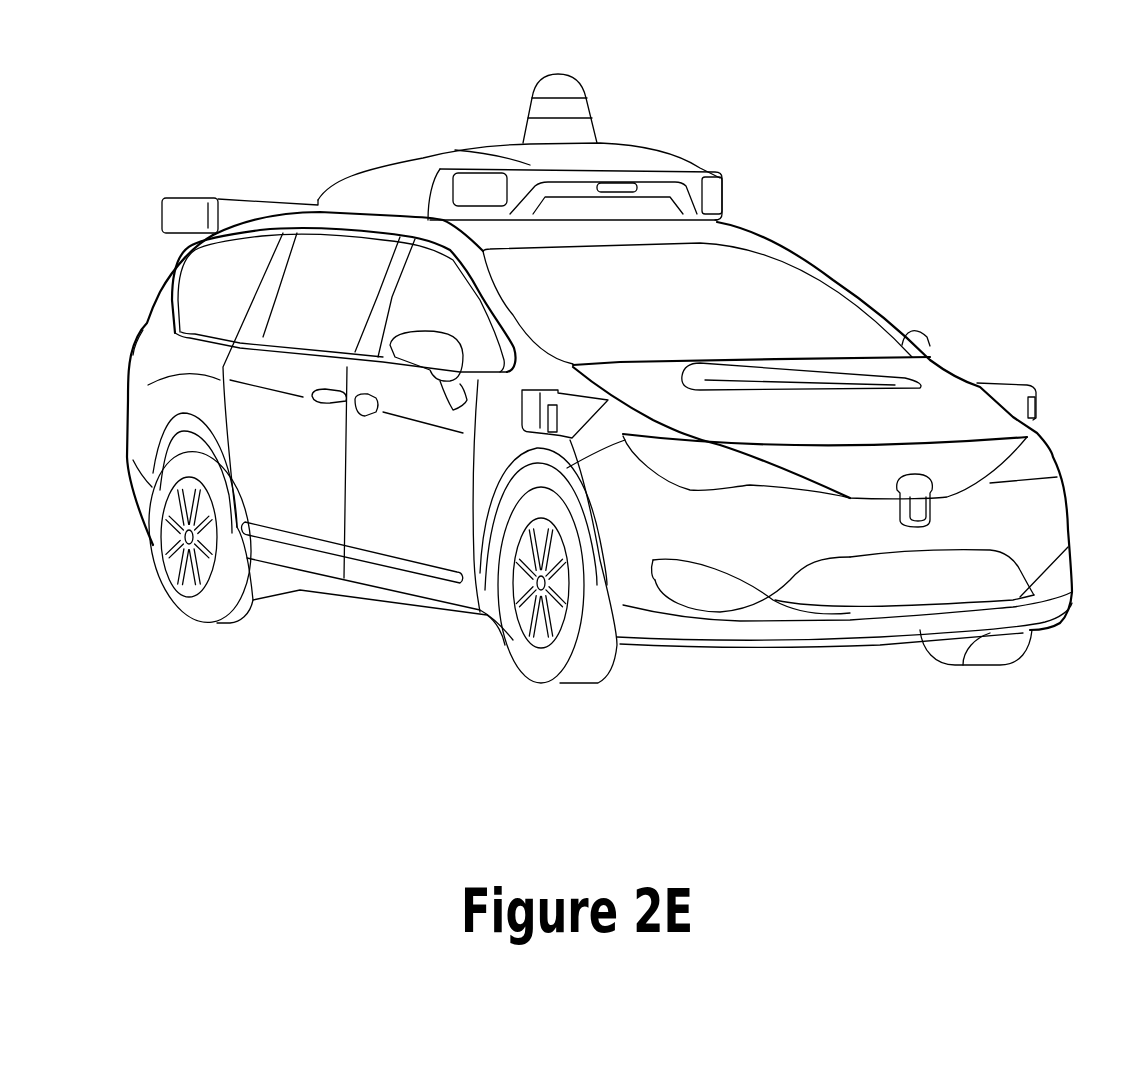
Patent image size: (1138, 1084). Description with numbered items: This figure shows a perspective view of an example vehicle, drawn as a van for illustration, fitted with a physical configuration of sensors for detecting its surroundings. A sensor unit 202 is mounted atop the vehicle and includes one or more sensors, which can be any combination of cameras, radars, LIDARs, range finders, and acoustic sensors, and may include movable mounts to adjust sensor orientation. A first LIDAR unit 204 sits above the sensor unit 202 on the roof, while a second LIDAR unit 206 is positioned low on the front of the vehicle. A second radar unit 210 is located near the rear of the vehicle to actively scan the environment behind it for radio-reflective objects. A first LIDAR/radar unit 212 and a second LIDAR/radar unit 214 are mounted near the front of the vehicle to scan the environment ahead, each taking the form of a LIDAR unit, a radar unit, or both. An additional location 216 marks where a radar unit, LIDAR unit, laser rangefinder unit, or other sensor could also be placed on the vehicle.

The sensor unit 202 is at (720, 212).
The first LIDAR unit 204 is at (523, 115).
The second LIDAR unit 206 is at (917, 527).
The second radar unit 210 is at (243, 201).
The first LIDAR/radar unit 212 is at (977, 378).
The second LIDAR/radar unit 214 is at (568, 440).
The additional location 216 is at (927, 337).